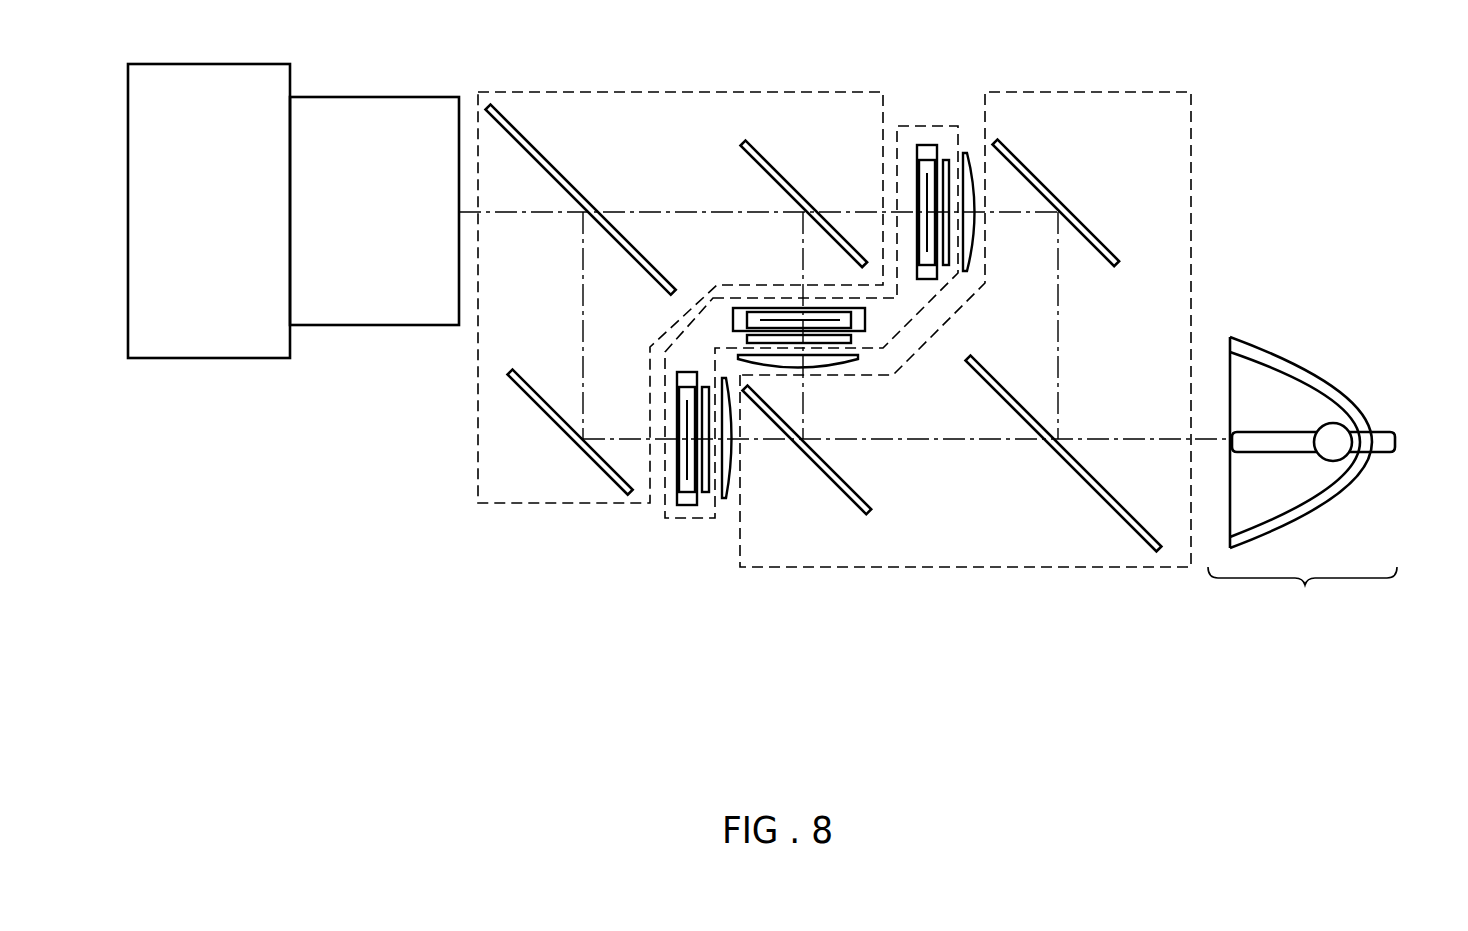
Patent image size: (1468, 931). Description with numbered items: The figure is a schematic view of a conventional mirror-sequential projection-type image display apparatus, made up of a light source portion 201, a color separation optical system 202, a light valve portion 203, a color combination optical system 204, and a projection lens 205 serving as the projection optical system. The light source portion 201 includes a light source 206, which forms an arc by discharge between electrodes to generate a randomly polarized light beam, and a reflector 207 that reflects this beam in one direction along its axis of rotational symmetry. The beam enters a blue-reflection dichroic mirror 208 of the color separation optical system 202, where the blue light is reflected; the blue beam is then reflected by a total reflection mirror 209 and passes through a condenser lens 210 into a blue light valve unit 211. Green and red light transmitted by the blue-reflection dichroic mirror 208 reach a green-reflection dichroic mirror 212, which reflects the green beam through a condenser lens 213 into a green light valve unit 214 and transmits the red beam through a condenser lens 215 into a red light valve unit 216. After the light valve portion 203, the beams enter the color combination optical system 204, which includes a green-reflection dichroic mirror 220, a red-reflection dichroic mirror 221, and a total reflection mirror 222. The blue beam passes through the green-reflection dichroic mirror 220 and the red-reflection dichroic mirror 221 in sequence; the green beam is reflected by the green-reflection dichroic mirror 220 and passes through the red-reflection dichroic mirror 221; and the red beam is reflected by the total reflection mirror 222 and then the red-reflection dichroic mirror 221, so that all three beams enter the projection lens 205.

The light source portion 201 is at (1302, 596).
The color separation optical system 202 is at (975, 567).
The light valve portion 203 is at (673, 520).
The color combination optical system 204 is at (587, 507).
The projection lens 205 is at (182, 358).
The light source 206 is at (1340, 423).
The reflector 207 is at (1288, 360).
The blue-reflection dichroic mirror 208 is at (1092, 490).
The total reflection mirror 209 is at (1085, 222).
The condenser lens 210 is at (968, 153).
The blue light valve unit 211 is at (925, 145).
The green-reflection dichroic mirror 212 is at (833, 488).
The condenser lens 213 is at (832, 370).
The green light valve unit 214 is at (865, 317).
The condenser lens 215 is at (728, 498).
The red light valve unit 216 is at (690, 507).
The green-reflection dichroic mirror 220 is at (783, 177).
The red-reflection dichroic mirror 221 is at (557, 165).
The total reflection mirror 222 is at (570, 440).